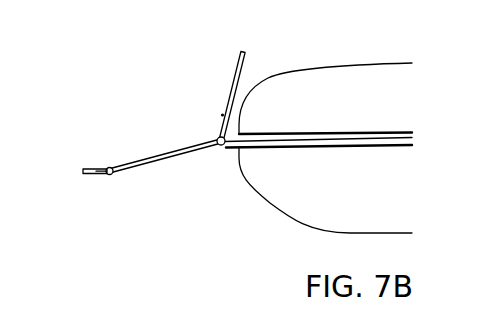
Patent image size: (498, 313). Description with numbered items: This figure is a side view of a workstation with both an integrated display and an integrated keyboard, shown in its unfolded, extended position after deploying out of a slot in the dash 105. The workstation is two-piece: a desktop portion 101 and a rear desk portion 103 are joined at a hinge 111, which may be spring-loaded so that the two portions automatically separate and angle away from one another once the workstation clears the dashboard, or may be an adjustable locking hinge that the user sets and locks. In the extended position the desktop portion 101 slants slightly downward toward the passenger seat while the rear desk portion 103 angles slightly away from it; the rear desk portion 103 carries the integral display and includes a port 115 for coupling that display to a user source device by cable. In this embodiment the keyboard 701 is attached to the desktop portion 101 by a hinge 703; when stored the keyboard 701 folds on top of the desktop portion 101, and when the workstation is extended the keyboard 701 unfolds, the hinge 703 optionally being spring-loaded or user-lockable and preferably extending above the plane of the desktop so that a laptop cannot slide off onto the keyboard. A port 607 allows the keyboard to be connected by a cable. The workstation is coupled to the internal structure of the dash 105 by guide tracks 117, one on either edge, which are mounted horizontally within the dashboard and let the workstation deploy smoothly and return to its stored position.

The desktop portion 101 is at (152, 160).
The rear desk portion 103 is at (230, 82).
The dash 105 is at (297, 118).
The hinge 111 is at (221, 145).
The port 115 is at (221, 115).
The guide tracks 117 is at (392, 138).
The port 607 is at (93, 174).
The keyboard 701 is at (90, 170).
The hinge 703 is at (111, 175).